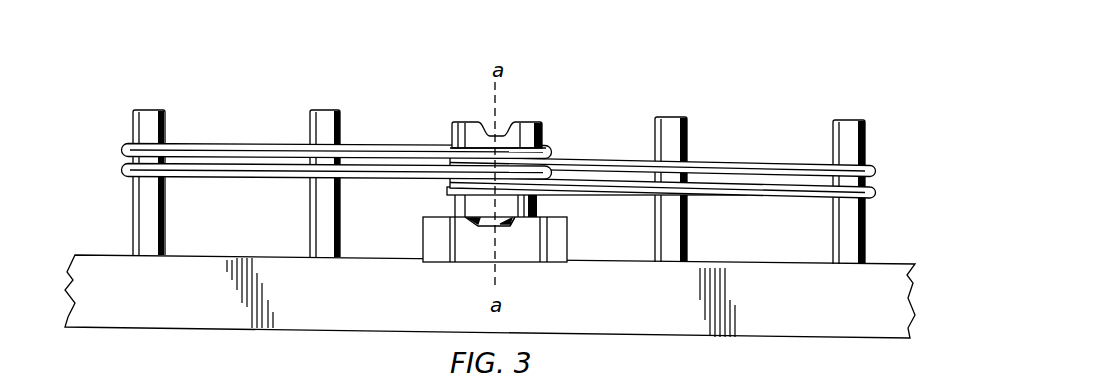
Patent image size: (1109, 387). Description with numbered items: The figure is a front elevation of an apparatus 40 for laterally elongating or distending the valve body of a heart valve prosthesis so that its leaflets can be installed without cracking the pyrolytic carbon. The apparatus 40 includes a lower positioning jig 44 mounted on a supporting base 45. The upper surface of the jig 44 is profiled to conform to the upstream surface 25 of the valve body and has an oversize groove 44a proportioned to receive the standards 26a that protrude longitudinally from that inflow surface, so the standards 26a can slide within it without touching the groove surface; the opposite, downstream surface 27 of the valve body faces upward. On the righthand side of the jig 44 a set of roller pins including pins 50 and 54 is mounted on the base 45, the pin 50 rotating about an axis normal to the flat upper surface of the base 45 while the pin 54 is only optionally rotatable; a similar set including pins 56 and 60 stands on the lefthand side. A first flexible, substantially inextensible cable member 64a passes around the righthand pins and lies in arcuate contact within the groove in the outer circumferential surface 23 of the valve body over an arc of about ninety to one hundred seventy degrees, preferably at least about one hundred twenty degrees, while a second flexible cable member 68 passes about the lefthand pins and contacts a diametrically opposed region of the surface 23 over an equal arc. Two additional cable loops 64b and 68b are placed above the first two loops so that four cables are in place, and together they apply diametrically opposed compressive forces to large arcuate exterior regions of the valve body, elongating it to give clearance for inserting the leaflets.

The outer circumferential surface 23 is at (455, 205).
The upstream surface 25 is at (532, 226).
The standards 26a is at (517, 226).
The downstream surface 27 is at (505, 133).
The apparatus 40 is at (754, 87).
The lower positioning jig 44 is at (567, 223).
The oversize groove 44a is at (472, 222).
The supporting base 45 is at (885, 263).
The roller pin 50 is at (688, 123).
The pin 54 is at (867, 134).
The roller pin 56 is at (339, 124).
The roller pin 60 is at (164, 114).
The first flexible cable member 64a is at (742, 195).
The additional cable loop 64b is at (772, 163).
The second flexible cable member 68 is at (254, 172).
The additional cable loop 68b is at (238, 152).